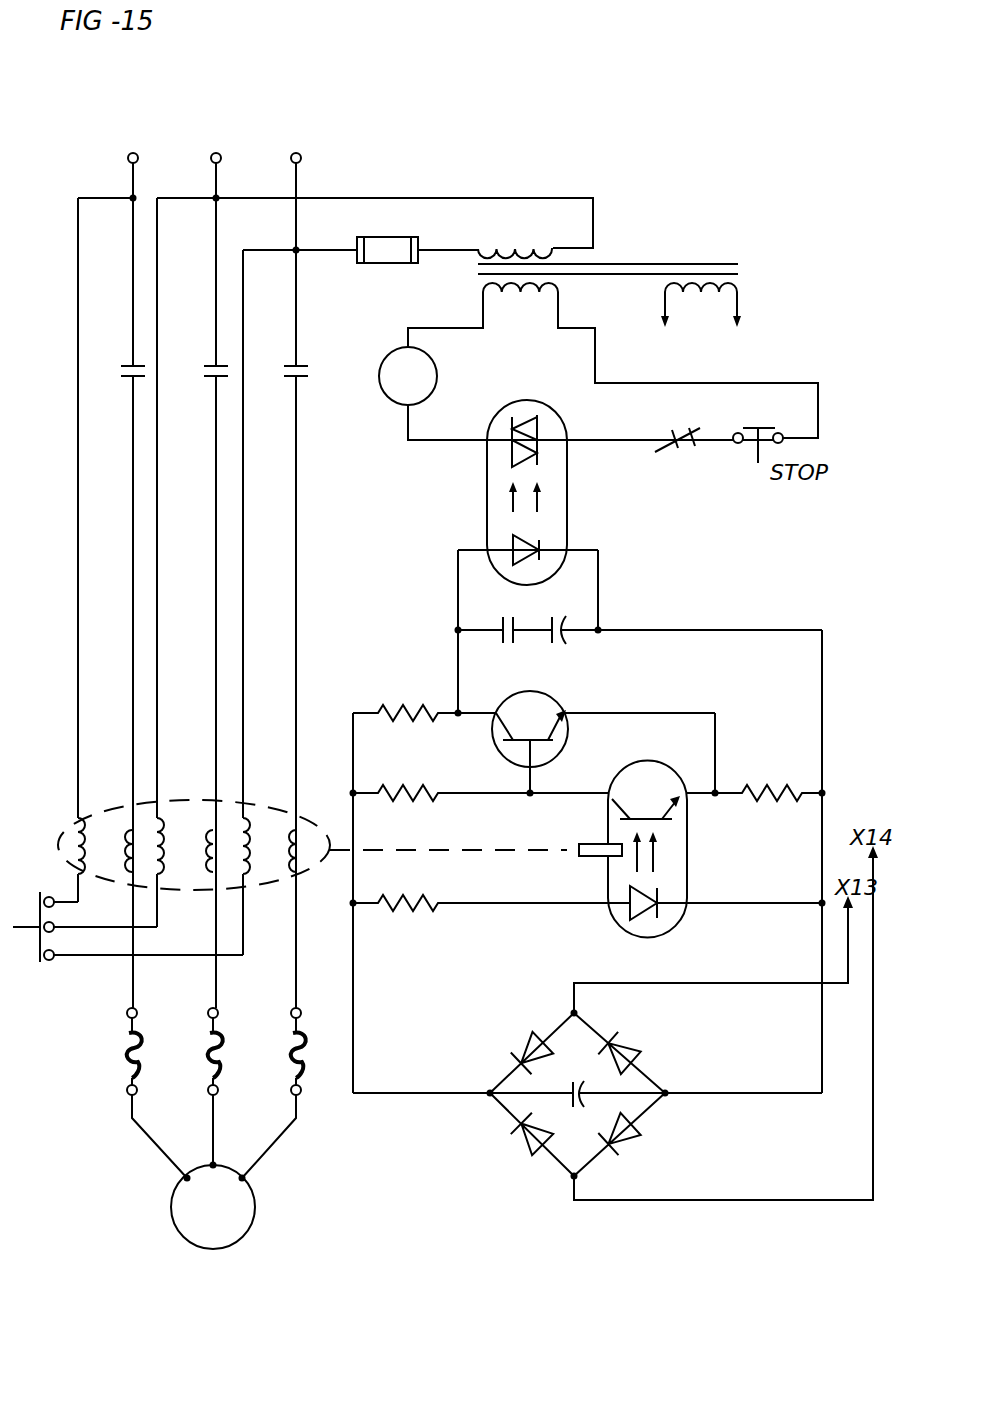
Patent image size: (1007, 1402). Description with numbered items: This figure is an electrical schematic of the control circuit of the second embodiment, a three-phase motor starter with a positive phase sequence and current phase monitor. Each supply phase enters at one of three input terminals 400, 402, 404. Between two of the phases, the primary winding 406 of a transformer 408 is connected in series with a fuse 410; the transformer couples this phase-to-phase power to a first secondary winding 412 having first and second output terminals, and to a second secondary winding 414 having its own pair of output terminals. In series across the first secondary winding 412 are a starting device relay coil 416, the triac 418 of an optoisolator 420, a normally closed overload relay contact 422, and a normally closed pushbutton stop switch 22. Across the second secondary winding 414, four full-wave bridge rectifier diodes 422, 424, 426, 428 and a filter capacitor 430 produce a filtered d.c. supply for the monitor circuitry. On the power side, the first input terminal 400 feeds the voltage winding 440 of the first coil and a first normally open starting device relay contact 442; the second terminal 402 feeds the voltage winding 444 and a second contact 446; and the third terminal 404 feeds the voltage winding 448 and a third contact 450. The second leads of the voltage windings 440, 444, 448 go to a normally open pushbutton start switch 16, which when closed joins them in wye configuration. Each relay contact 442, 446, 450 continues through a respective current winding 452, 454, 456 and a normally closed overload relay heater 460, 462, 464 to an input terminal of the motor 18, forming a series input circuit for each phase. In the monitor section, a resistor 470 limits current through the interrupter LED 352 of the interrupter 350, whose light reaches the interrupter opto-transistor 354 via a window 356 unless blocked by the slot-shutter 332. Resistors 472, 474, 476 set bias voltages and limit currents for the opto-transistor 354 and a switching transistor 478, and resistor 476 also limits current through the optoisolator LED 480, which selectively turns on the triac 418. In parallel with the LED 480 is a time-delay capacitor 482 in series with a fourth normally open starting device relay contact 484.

The start switch 16 is at (37, 906).
The motor 18 is at (178, 1226).
The stop switch 22 is at (680, 432).
The slot-shutter 332 is at (588, 843).
The interrupter 350 is at (688, 850).
The interrupter LED 352 is at (622, 914).
The interrupter opto-transistor 354 is at (667, 757).
The light sensor window 356 is at (614, 859).
The first input terminal 400 is at (133, 154).
The second input terminal 402 is at (211, 160).
The third input terminal 404 is at (292, 158).
The primary winding 406 is at (500, 245).
The transformer 408 is at (645, 266).
The fuse 410 is at (390, 236).
The first secondary winding 412 is at (496, 298).
The second secondary winding 414 is at (678, 298).
The starting device relay coil 416 is at (380, 393).
The triac 418 is at (545, 425).
The optoisolator 420 is at (567, 500).
The overload relay contact 422 is at (601, 741).
The bridge rectifier diode 424 is at (640, 1050).
The bridge rectifier diode 426 is at (517, 1148).
The bridge rectifier diode 428 is at (628, 1142).
The filter capacitor 430 is at (600, 1076).
The voltage winding 440 is at (97, 812).
The first starting device relay contact 442 is at (118, 400).
The voltage winding 444 is at (175, 812).
The second starting device relay contact 446 is at (200, 400).
The voltage winding 448 is at (255, 812).
The third starting device relay contact 450 is at (282, 400).
The current winding 452 is at (117, 865).
The current winding 454 is at (197, 868).
The current winding 456 is at (277, 868).
The overload relay heater 460 is at (135, 1023).
The overload relay heater 462 is at (246, 1011).
The overload relay heater 464 is at (330, 1006).
The resistor 470 is at (400, 910).
The resistor 472 is at (400, 800).
The resistor 474 is at (762, 786).
The resistor 476 is at (398, 722).
The switching transistor 478 is at (553, 702).
The optoisolator LED 480 is at (512, 544).
The time-delay capacitor 482 is at (568, 640).
The fourth starting device relay contact 484 is at (522, 612).